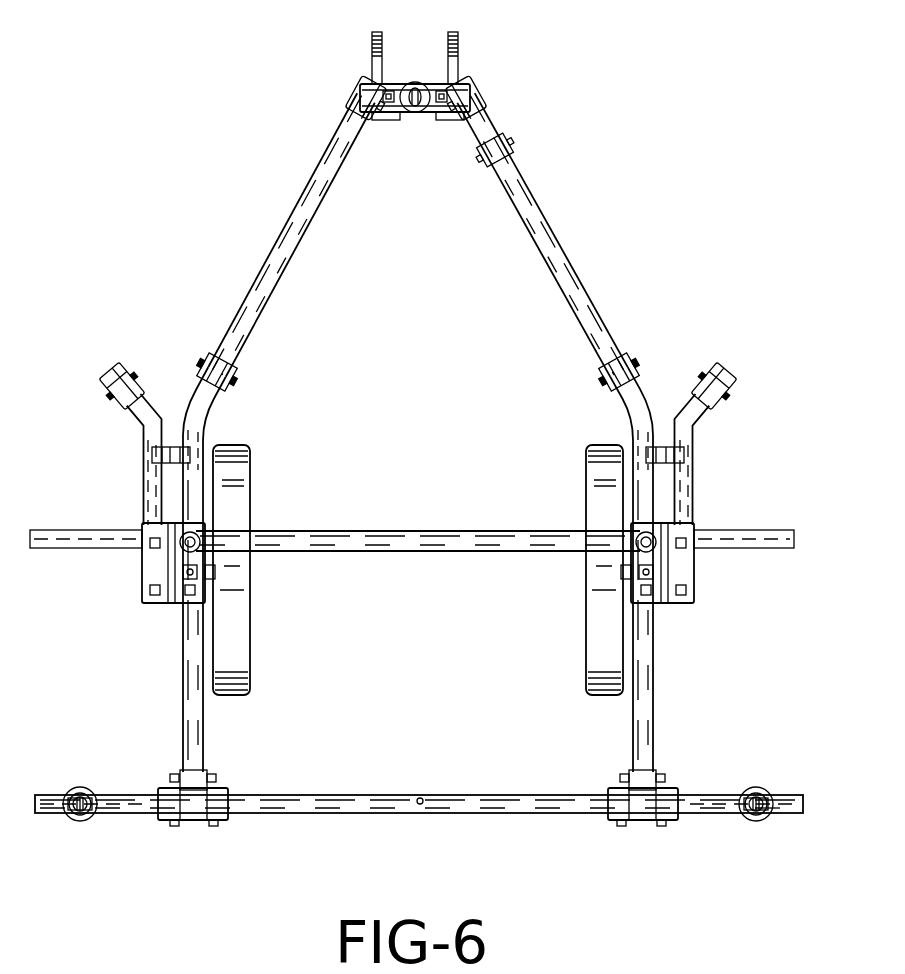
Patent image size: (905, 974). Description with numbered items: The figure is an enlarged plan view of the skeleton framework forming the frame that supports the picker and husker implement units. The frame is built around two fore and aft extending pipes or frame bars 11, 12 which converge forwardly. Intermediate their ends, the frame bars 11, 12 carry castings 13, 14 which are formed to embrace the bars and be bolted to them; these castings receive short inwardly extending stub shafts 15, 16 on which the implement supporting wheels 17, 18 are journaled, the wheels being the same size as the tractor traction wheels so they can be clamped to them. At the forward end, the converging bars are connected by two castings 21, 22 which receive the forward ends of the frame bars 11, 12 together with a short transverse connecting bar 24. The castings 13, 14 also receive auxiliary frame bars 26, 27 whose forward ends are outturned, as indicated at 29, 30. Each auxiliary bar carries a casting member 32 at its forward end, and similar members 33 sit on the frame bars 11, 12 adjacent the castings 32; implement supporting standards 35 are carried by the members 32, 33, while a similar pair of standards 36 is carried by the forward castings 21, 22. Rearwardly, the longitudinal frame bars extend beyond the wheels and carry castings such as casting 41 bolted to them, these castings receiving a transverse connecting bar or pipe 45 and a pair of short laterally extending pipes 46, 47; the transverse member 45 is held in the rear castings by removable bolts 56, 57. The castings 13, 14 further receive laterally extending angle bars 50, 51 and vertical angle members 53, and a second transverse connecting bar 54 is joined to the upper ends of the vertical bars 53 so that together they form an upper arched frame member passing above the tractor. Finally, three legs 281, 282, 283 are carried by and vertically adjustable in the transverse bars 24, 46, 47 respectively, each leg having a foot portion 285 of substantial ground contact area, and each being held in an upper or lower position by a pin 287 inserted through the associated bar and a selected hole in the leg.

The frame bar 11 is at (192, 676).
The frame bar 12 is at (648, 680).
The casting 13 is at (172, 600).
The casting 14 is at (665, 600).
The stub shaft 15 is at (215, 570).
The stub shaft 16 is at (621, 570).
The implement supporting wheel 17 is at (244, 485).
The implement supporting wheel 18 is at (590, 470).
The casting 21 is at (355, 92).
The casting 22 is at (471, 82).
The transverse connecting bar 24 is at (402, 86).
The auxiliary frame bar 26 is at (148, 471).
The auxiliary frame bar 27 is at (683, 470).
The outturned forward end 29 is at (156, 416).
The outturned forward end 30 is at (668, 412).
The casting member 32 is at (110, 381).
The casting member 33 is at (233, 375).
The implement supporting standard 35 is at (205, 376).
The standard 36 is at (452, 32).
The casting 41 is at (658, 778).
The transverse connecting bar 45 is at (408, 797).
The laterally extending pipe 46 is at (121, 798).
The laterally extending pipe 47 is at (720, 797).
The angle bar 50 is at (100, 543).
The angle bar 51 is at (732, 543).
The vertical angle member 53 is at (191, 532).
The second transverse connecting bar 54 is at (393, 540).
The removable bolt 56 is at (215, 822).
The removable bolt 57 is at (623, 822).
The leg 281 is at (405, 114).
The leg 282 is at (76, 818).
The leg 283 is at (753, 815).
The foot portion 285 is at (430, 114).
The pin 287 is at (421, 82).